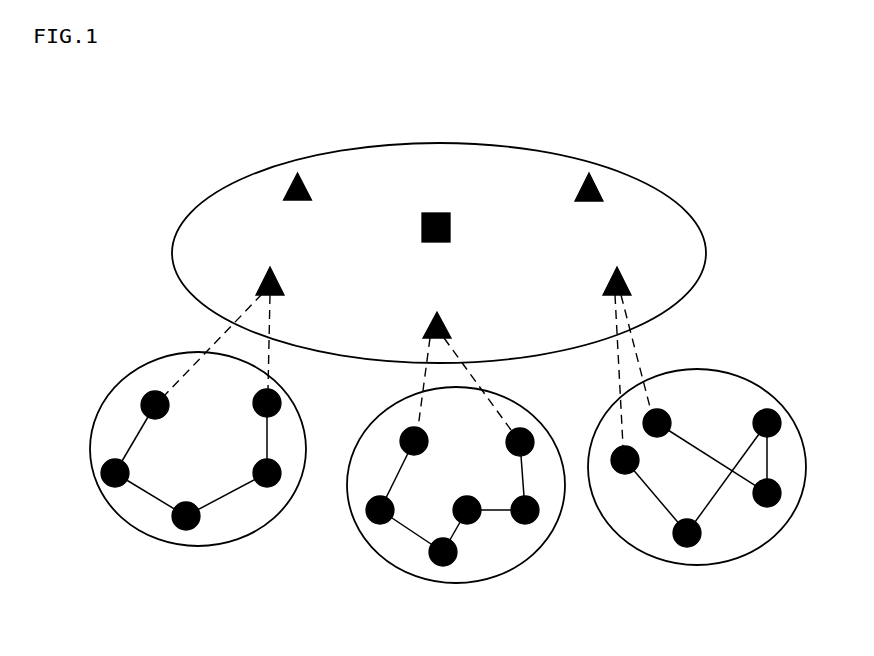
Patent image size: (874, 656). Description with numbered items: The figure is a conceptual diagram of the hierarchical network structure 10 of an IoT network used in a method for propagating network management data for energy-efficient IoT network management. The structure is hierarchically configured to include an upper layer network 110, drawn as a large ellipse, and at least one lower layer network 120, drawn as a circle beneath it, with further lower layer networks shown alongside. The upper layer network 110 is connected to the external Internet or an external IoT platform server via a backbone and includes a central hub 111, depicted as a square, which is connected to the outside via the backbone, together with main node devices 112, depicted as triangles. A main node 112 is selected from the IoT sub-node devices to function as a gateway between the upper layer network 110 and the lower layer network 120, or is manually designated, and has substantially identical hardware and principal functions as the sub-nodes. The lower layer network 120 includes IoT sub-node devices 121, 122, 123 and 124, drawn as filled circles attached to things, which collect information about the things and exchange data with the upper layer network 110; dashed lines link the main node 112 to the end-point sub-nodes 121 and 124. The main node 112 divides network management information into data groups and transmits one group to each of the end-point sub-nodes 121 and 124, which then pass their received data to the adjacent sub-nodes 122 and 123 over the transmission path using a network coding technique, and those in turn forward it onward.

The hierarchical network structure 10 is at (581, 90).
The upper layer network 110 is at (680, 203).
The central hub 111 is at (440, 212).
The main node device 112 is at (265, 272).
The lower layer network 120 is at (206, 442).
The sub-node device 121 is at (142, 405).
The sub-node device 122 is at (108, 483).
The sub-node device 123 is at (277, 487).
The sub-node device 124 is at (281, 399).